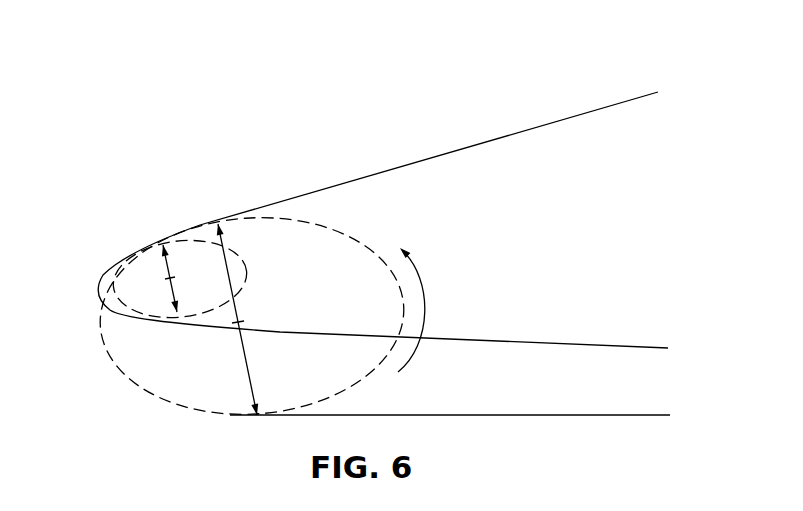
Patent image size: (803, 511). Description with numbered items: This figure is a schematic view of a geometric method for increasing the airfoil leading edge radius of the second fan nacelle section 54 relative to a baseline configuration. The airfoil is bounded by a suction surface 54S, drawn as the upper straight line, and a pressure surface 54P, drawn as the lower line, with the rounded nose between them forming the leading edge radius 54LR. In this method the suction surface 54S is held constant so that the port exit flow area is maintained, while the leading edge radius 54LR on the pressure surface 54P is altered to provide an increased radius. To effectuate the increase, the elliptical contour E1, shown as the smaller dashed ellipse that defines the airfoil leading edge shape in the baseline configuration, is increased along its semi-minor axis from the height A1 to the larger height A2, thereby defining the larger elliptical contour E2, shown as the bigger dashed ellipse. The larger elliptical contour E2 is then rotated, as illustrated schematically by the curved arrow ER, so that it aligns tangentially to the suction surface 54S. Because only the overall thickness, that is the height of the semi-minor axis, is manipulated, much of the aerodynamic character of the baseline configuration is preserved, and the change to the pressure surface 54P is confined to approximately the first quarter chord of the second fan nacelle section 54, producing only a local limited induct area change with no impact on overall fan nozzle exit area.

The second fan nacelle section 54 is at (348, 253).
The suction surface 54S is at (580, 113).
The pressure surface 54P is at (564, 417).
The leading edge radius 54LR is at (100, 352).
The elliptical contour E1 is at (192, 242).
The larger elliptical contour E2 is at (358, 240).
The semi-minor axis A1 is at (172, 271).
The semi-minor axis A2 is at (238, 318).
The arrow ER is at (427, 303).